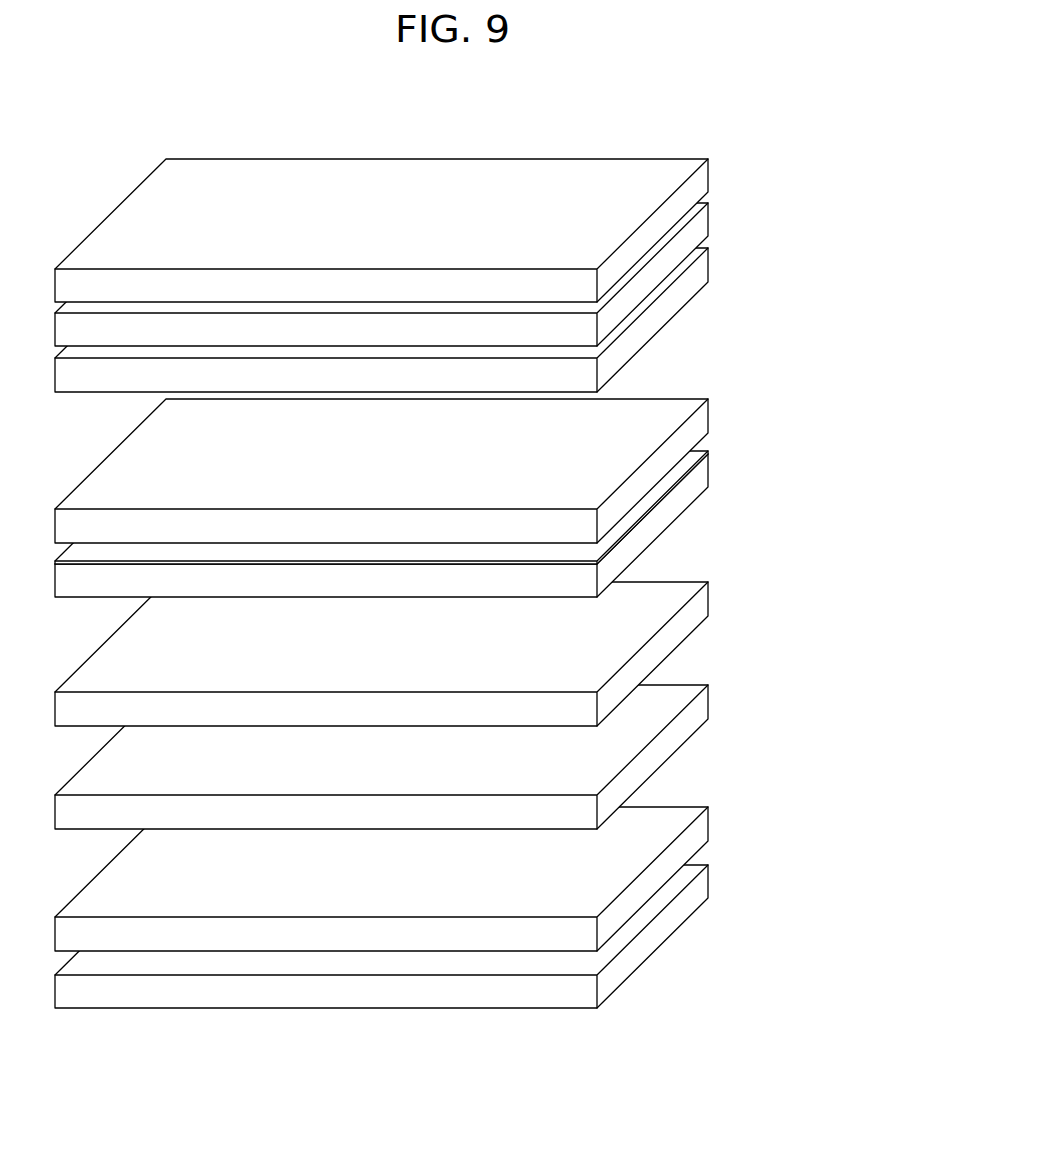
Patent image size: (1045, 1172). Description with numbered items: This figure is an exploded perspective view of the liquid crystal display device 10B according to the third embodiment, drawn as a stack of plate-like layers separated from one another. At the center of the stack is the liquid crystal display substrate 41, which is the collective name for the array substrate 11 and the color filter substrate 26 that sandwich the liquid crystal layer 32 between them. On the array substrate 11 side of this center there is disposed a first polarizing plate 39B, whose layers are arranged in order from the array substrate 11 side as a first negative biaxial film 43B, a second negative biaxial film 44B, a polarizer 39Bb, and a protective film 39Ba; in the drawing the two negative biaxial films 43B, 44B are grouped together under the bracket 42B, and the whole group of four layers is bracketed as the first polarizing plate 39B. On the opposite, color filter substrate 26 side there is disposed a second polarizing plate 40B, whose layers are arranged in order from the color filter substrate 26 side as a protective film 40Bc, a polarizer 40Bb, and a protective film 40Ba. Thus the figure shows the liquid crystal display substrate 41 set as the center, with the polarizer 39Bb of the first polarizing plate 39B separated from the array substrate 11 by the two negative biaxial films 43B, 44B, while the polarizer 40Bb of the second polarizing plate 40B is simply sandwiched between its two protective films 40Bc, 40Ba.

The liquid crystal display device 10B is at (567, 104).
The protective film 40Ba is at (819, 262).
The polarizer 40Bb is at (695, 237).
The protective film 40Bc is at (695, 281).
The second polarizing plate 40B is at (474, 267).
The color filter substrate 26 is at (695, 432).
The liquid crystal layer 32 is at (695, 453).
The array substrate 11 is at (695, 486).
The liquid crystal display substrate 41 is at (448, 487).
The first negative biaxial film 43B is at (810, 695).
The second negative biaxial film 44B is at (695, 719).
The plate assembly 42B is at (462, 693).
The polarizer 39Bb is at (695, 841).
The protective film 39Ba is at (695, 899).
The first polarizing plate 39B is at (492, 782).